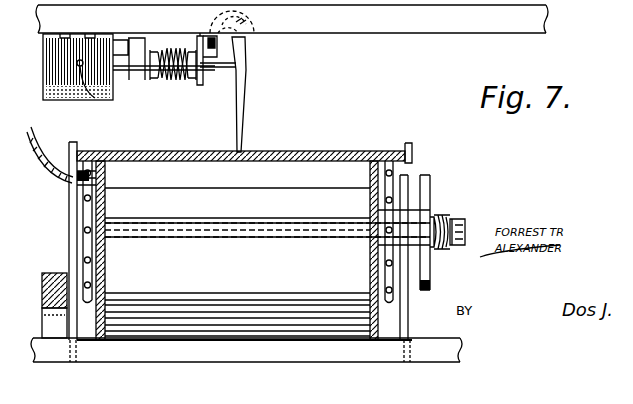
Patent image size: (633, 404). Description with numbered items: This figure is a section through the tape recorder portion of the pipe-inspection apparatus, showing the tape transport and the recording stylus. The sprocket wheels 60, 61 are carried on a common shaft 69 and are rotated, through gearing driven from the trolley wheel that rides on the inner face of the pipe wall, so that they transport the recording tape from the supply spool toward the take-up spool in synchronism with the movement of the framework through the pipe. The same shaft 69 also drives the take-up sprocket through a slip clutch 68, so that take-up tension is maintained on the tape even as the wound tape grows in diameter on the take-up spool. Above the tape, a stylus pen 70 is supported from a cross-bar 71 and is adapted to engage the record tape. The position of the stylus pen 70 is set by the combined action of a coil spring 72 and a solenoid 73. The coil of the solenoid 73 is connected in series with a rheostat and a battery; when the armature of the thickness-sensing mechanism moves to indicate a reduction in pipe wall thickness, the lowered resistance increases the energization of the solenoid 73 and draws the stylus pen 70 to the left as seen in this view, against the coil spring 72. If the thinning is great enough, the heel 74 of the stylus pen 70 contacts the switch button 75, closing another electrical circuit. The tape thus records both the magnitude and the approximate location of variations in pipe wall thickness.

The sprocket wheel 60 is at (88, 206).
The sprocket wheel 61 is at (395, 175).
The slip clutch 68 is at (438, 218).
The shaft 69 is at (236, 218).
The stylus pen 70 is at (244, 95).
The cross-bar 71 is at (343, 23).
The coil spring 72 is at (170, 79).
The solenoid 73 is at (94, 98).
The heel 74 is at (243, 50).
The switch button 75 is at (216, 52).